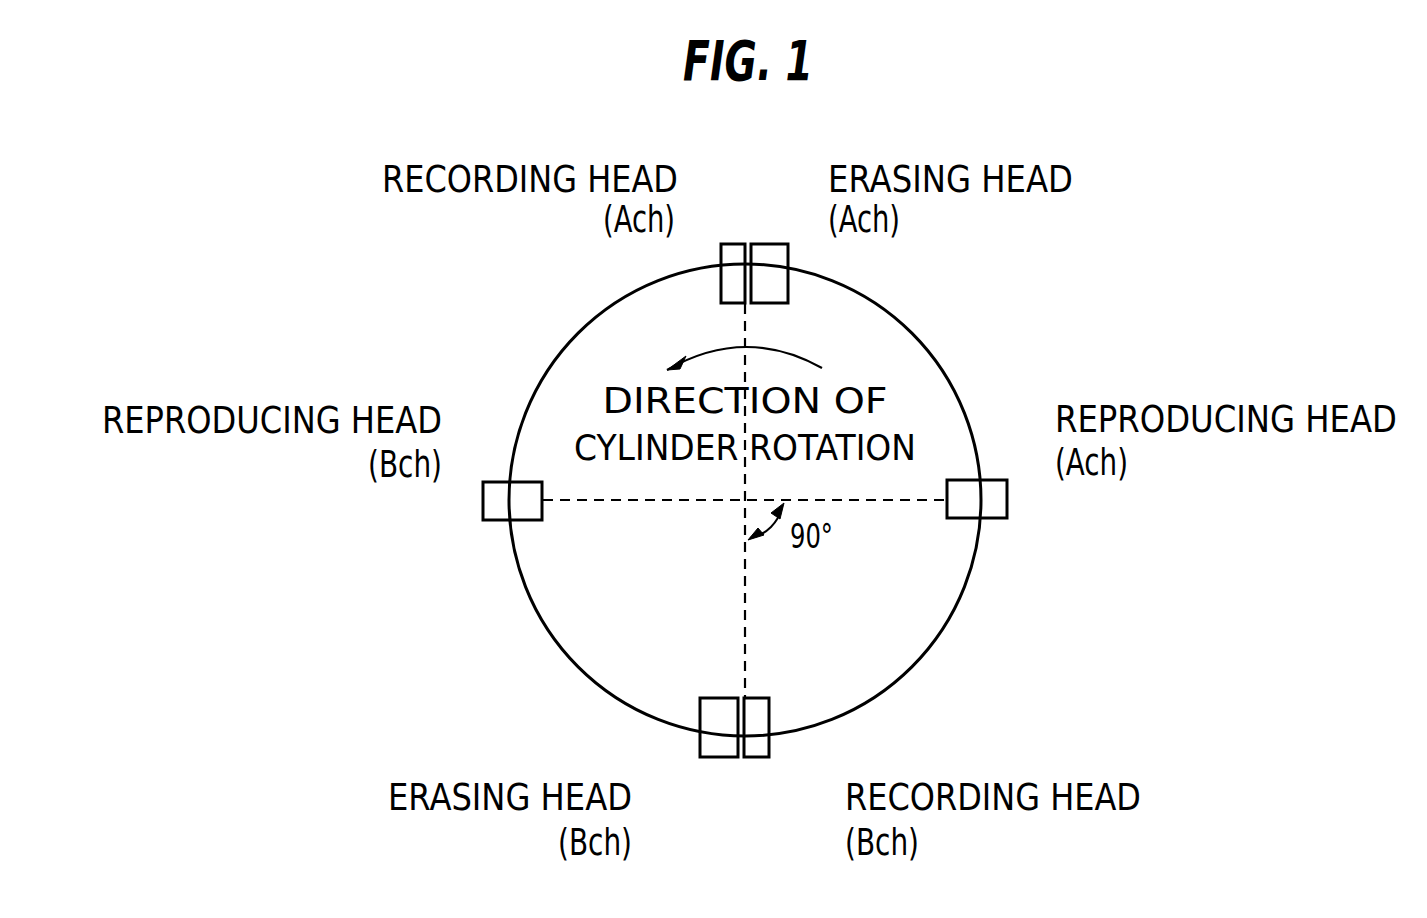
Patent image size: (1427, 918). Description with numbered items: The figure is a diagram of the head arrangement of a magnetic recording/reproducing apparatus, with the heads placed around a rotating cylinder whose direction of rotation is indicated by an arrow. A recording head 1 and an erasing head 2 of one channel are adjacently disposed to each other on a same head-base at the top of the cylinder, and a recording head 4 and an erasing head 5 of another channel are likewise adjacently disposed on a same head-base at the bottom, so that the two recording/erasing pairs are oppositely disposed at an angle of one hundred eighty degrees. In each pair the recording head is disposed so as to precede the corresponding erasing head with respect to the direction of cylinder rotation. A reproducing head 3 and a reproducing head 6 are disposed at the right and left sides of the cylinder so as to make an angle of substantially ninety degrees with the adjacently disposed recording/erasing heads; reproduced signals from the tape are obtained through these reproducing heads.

The recording head 1 is at (733, 243).
The erasing head 2 is at (770, 243).
The reproducing head 3 is at (993, 480).
The recording head 4 is at (757, 758).
The erasing head 5 is at (718, 758).
The reproducing head 6 is at (495, 481).